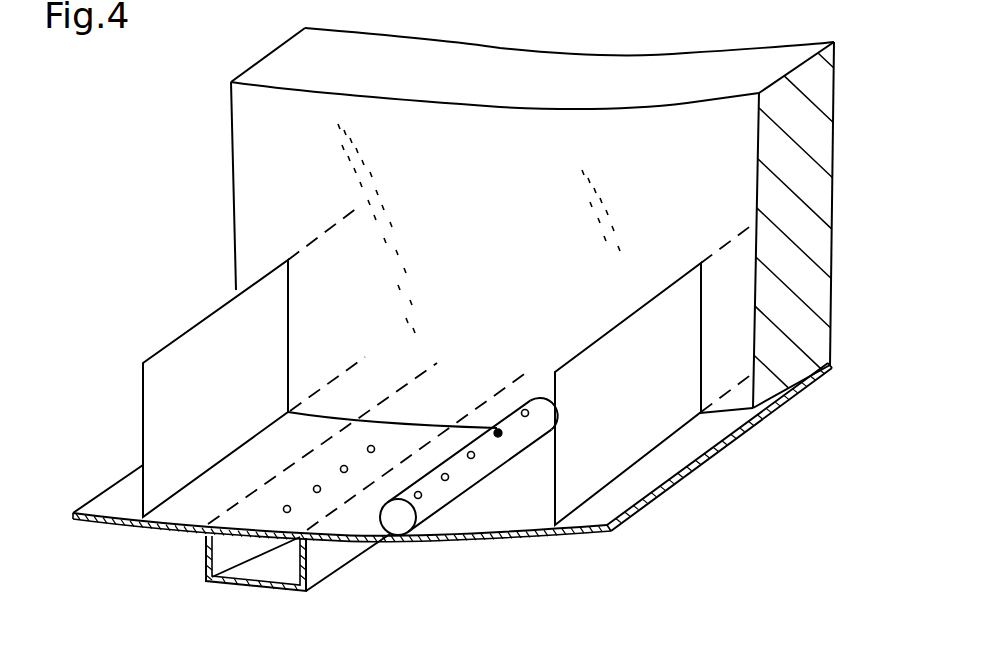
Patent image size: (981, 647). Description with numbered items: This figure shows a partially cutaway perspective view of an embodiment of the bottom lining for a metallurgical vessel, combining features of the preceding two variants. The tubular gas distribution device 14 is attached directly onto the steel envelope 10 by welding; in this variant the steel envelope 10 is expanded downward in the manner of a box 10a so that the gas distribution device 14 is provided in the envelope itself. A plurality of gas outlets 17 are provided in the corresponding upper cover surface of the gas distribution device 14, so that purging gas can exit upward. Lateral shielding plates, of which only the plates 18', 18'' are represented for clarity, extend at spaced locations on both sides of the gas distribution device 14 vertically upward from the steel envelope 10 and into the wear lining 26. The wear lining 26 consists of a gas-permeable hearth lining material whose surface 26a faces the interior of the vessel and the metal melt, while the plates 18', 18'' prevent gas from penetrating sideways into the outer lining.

The steel envelope 10 is at (523, 533).
The box 10a is at (283, 587).
The gas distribution device 14 is at (263, 568).
The gas outlets 17 is at (374, 447).
The shielding plate 18' is at (254, 362).
The shielding plate 18'' is at (653, 375).
The wear lining 26 is at (265, 152).
The surface 26a is at (420, 62).